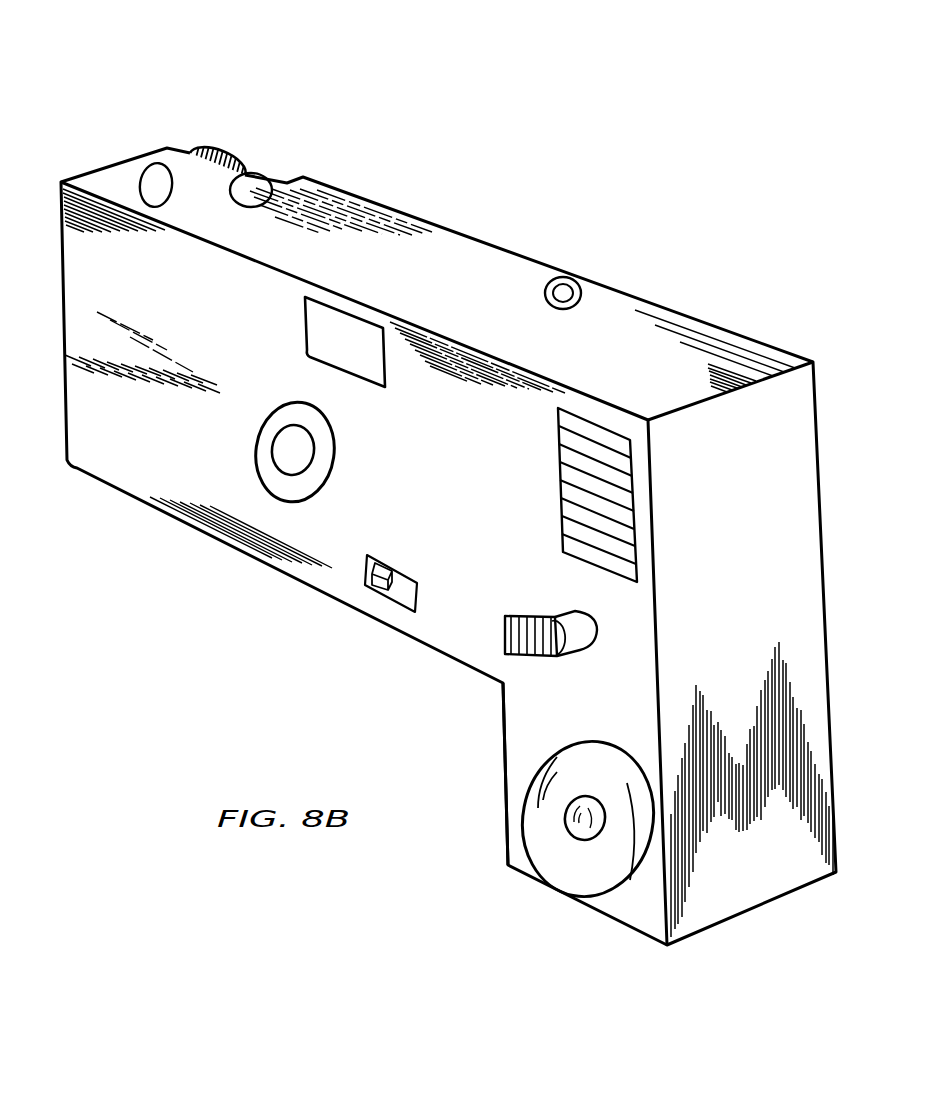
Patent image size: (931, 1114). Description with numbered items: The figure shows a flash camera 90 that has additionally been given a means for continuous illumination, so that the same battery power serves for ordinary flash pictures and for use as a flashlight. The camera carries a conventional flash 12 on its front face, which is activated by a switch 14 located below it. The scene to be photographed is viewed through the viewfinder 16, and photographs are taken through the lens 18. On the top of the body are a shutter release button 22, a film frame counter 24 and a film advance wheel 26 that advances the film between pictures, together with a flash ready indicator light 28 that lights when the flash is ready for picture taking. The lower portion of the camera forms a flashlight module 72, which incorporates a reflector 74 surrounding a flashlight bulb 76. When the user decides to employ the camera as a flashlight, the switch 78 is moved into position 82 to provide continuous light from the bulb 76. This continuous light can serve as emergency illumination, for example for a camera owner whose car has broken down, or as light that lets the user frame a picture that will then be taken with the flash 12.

The camera 90 is at (332, 97).
The flash 12 is at (634, 482).
The switch 14 is at (544, 657).
The viewfinder 16 is at (360, 313).
The lens 18 is at (313, 462).
The shutter release button 22 is at (145, 170).
The film frame counter 24 is at (258, 185).
The film advance wheel 26 is at (210, 150).
The flash ready indicator light 28 is at (568, 280).
The flashlight module 72 is at (507, 743).
The reflector 74 is at (542, 820).
The flashlight bulb 76 is at (588, 833).
The switch 78 is at (370, 590).
The position 82 is at (403, 597).